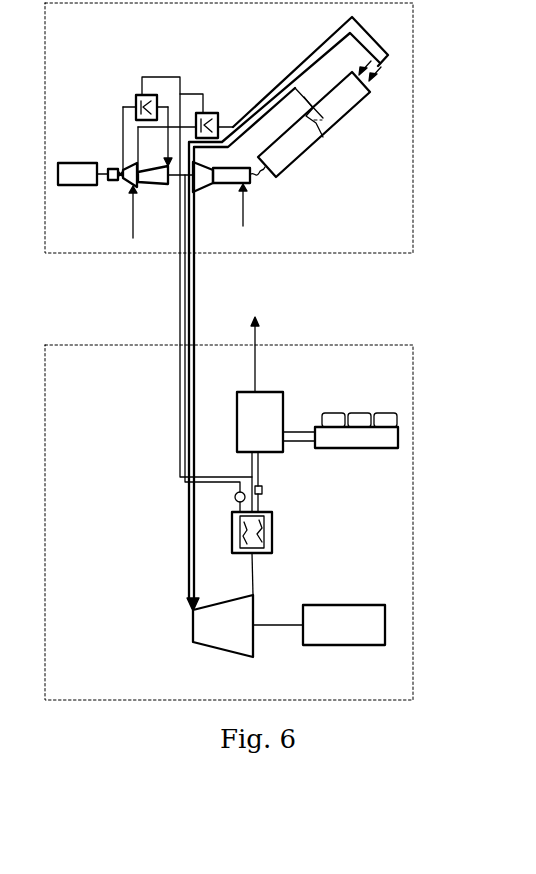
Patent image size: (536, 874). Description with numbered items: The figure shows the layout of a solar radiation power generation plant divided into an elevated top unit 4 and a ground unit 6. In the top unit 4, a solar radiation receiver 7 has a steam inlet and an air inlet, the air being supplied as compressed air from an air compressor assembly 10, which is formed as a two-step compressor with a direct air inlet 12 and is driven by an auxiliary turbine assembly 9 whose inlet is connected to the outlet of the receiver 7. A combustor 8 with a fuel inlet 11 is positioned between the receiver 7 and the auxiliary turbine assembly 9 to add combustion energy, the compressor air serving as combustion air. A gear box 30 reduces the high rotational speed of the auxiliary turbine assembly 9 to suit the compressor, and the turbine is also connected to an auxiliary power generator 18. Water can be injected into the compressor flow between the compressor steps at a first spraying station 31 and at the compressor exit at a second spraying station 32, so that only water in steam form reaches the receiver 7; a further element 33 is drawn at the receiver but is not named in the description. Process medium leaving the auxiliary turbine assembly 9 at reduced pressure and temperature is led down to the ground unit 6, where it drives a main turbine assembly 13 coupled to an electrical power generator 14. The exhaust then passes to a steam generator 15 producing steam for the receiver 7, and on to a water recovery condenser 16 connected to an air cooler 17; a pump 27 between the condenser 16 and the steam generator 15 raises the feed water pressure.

The top unit 4 is at (413, 141).
The ground unit 6 is at (413, 508).
The solar radiation receiver 7 is at (345, 107).
The combustor 8 is at (230, 184).
The auxiliary turbine assembly 9 is at (202, 180).
The air compressor assembly 10 is at (140, 184).
The fuel inlet 11 is at (248, 205).
The direct air inlet 12 is at (128, 228).
The main turbine assembly 13 is at (222, 638).
The electrical power generator 14 is at (370, 604).
The steam generator 15 is at (272, 534).
The water recovery condenser 16 is at (270, 405).
The air cooler 17 is at (352, 447).
The auxiliary power generator 18 is at (77, 163).
The pump 27 is at (263, 490).
The gear box 30 is at (112, 167).
The first spraying station 31 is at (136, 95).
The second spraying station 32 is at (212, 112).
The nozzle 33 is at (302, 95).